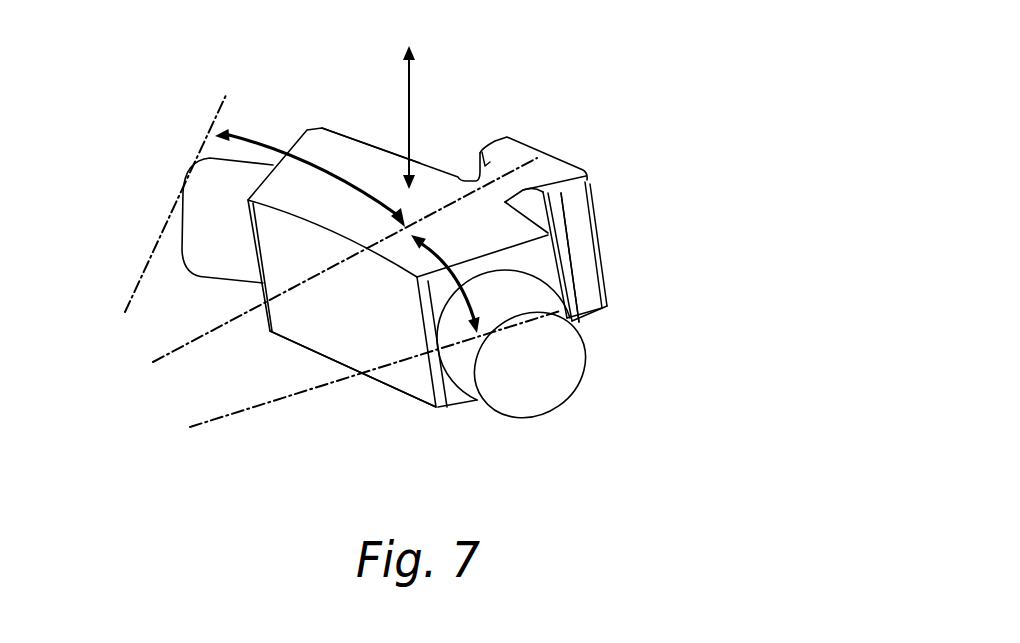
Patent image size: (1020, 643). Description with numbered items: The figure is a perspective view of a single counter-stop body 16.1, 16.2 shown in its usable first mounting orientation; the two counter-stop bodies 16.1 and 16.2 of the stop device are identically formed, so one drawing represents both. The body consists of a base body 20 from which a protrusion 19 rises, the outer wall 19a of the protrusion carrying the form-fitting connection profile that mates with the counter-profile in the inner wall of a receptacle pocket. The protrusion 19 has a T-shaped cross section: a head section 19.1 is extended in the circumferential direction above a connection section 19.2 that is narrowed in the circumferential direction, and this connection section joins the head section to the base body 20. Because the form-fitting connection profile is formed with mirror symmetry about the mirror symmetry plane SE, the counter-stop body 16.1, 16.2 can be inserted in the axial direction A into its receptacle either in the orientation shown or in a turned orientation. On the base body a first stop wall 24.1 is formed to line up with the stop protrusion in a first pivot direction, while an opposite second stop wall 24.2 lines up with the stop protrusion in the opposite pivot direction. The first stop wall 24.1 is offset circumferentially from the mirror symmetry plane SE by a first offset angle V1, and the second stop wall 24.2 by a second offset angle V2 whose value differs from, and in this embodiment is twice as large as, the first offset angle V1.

The counter-stop body 16.1 is at (407, 370).
The counter-stop body 16.2 is at (369, 415).
The protrusion 19 is at (566, 132).
The head section 19.1 is at (509, 137).
The connection section 19.2 is at (548, 193).
The outer wall 19a is at (578, 236).
The base body 20 is at (367, 157).
The first stop wall 24.1 is at (545, 388).
The second stop wall 24.2 is at (178, 237).
The mirror symmetry plane SE is at (175, 353).
The axial direction A is at (409, 112).
The first offset angle V1 is at (463, 295).
The second offset angle V2 is at (262, 142).